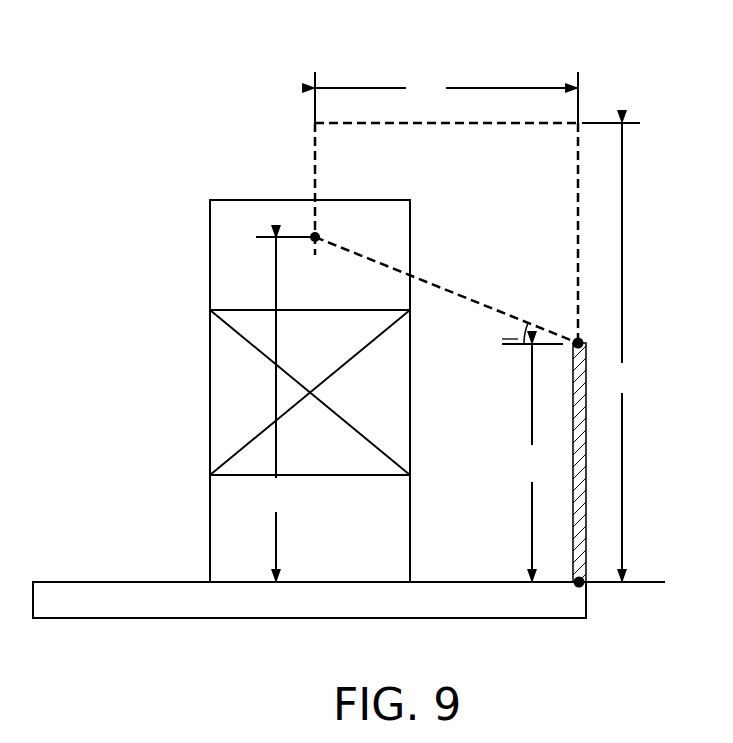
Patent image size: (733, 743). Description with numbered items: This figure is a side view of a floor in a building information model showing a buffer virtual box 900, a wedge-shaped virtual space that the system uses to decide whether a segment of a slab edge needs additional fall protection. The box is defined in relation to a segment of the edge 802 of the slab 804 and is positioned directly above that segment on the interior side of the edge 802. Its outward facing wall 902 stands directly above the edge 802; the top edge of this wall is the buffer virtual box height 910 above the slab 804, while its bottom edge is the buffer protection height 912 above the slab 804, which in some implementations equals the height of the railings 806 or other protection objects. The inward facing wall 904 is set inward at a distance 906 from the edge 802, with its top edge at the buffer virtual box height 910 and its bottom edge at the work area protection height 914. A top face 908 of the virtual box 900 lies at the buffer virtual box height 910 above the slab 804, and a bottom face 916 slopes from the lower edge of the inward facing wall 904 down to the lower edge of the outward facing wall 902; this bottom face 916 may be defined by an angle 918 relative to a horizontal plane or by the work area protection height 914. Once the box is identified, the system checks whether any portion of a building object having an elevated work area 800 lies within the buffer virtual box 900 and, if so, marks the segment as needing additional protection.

The elevated work area 800 is at (228, 200).
The edge 802 is at (584, 586).
The slab 804 is at (127, 603).
The railings 806 is at (578, 525).
The buffer virtual box 900 is at (466, 179).
The outward facing wall 902 is at (580, 225).
The inward facing wall 904 is at (315, 165).
The distance W 906 is at (500, 88).
The top face 908 is at (505, 123).
The buffer virtual box height H1 910 is at (622, 455).
The buffer protection height P1 912 is at (532, 420).
The work area protection height P2 914 is at (277, 540).
The bottom face 916 is at (465, 307).
The angle A 918 is at (218, 293).